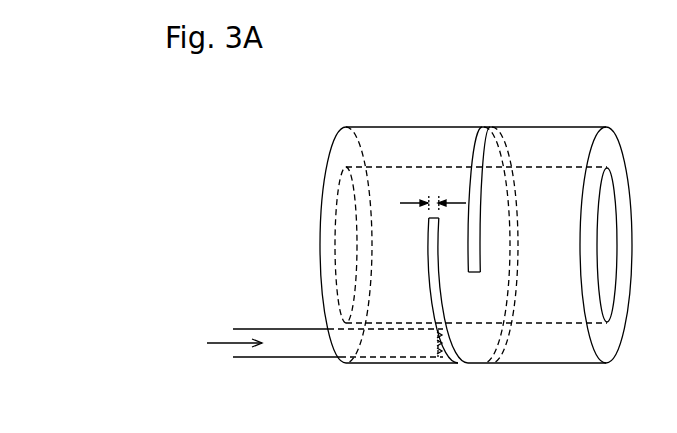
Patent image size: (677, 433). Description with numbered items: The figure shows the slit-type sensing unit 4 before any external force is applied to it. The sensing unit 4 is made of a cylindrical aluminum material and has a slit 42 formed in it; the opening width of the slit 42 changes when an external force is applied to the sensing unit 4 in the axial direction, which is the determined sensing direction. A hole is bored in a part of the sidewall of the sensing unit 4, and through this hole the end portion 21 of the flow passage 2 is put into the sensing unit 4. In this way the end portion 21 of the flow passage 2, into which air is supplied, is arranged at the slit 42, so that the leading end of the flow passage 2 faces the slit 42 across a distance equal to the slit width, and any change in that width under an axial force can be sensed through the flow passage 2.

The sensing unit 4 is at (558, 127).
The slit 42 is at (484, 128).
The flow passage 2 is at (270, 328).
The end portion of the flow passage 21 is at (443, 365).